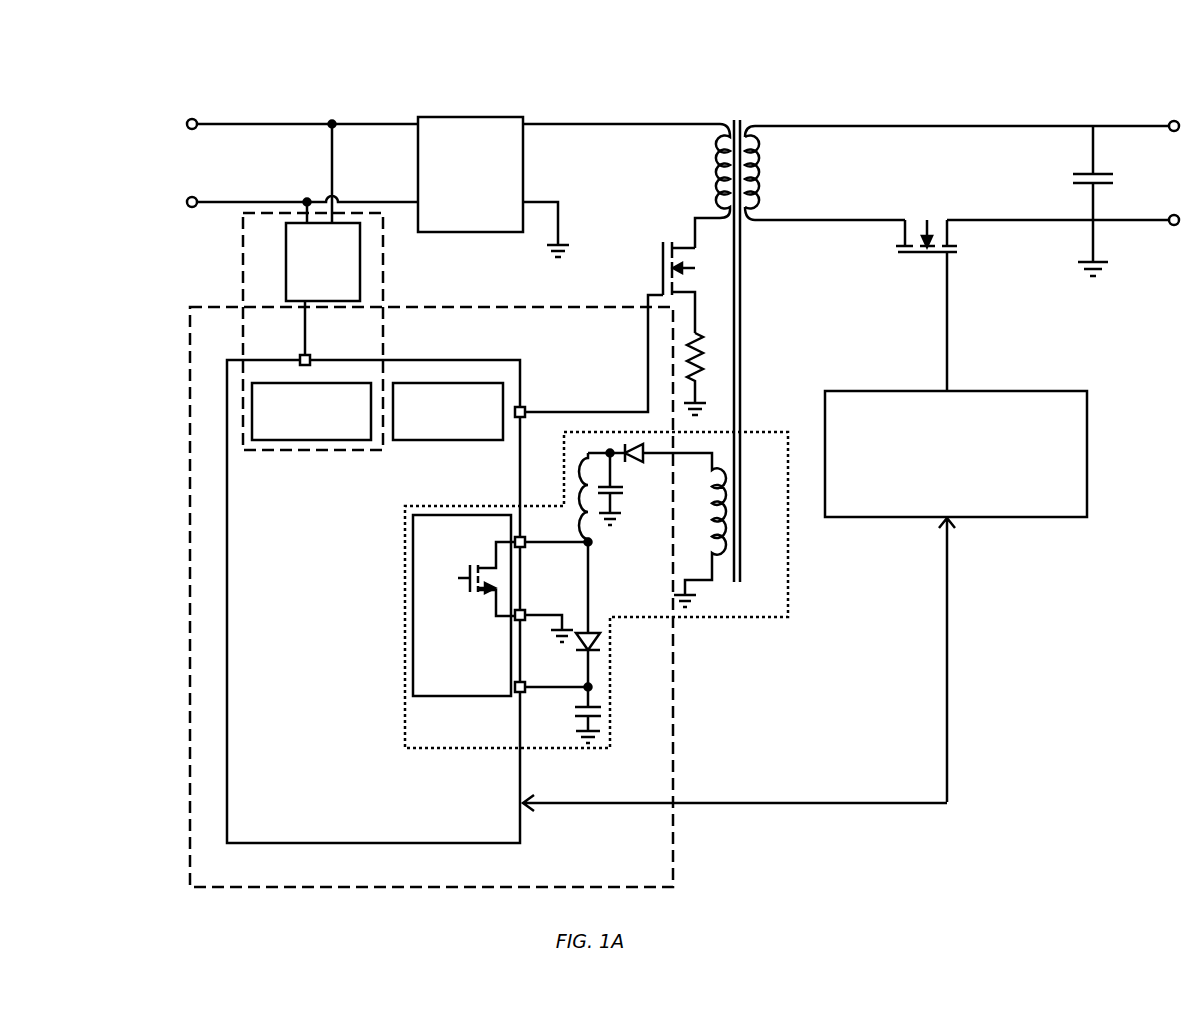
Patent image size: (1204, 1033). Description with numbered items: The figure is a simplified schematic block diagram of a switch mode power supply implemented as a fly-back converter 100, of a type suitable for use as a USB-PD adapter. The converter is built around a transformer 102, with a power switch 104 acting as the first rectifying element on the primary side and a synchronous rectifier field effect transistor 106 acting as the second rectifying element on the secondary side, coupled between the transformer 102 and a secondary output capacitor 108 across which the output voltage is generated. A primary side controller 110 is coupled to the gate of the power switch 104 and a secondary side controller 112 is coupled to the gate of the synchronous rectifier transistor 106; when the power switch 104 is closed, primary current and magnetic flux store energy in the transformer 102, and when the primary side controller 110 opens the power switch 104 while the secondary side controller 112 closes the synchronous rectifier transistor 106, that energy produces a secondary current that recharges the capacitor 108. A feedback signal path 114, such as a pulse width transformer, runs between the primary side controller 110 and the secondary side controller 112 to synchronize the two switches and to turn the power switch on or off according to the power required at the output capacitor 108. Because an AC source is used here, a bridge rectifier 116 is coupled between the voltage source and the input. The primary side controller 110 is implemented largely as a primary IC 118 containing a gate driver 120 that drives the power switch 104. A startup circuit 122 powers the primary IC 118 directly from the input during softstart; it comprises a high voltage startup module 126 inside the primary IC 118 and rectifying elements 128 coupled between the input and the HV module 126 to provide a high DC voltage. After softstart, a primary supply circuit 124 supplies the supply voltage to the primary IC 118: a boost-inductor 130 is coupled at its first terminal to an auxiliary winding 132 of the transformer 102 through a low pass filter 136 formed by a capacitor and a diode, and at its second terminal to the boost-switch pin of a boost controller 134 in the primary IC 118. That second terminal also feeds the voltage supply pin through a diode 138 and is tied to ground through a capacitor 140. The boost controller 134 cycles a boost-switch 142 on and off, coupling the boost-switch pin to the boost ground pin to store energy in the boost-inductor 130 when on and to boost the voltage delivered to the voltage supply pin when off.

The fly-back converter 100 is at (663, 125).
The transformer 102 is at (738, 104).
The power switch 104 is at (672, 220).
The synchronous rectifier field effect transistor 106 is at (916, 206).
The secondary output capacitor 108 is at (1113, 174).
The primary side controller 110 is at (431, 597).
The secondary side controller 112 is at (956, 454).
The feedback signal path 114 is at (813, 803).
The bridge rectifier 116 is at (493, 187).
The primary integrated circuit 118 is at (407, 599).
The gate driver 120 is at (448, 411).
The startup circuit 122 is at (243, 262).
The primary supply circuit 124 is at (645, 514).
The high voltage startup module 126 is at (311, 411).
The rectifying elements 128 is at (323, 289).
The boost-inductor 130 is at (587, 452).
The auxiliary winding 132 is at (716, 583).
The boost controller 134 is at (462, 605).
The low pass filter 136 is at (629, 481).
The diode 138 is at (601, 641).
The capacitor 140 is at (601, 710).
The boost-switch 142 is at (461, 560).